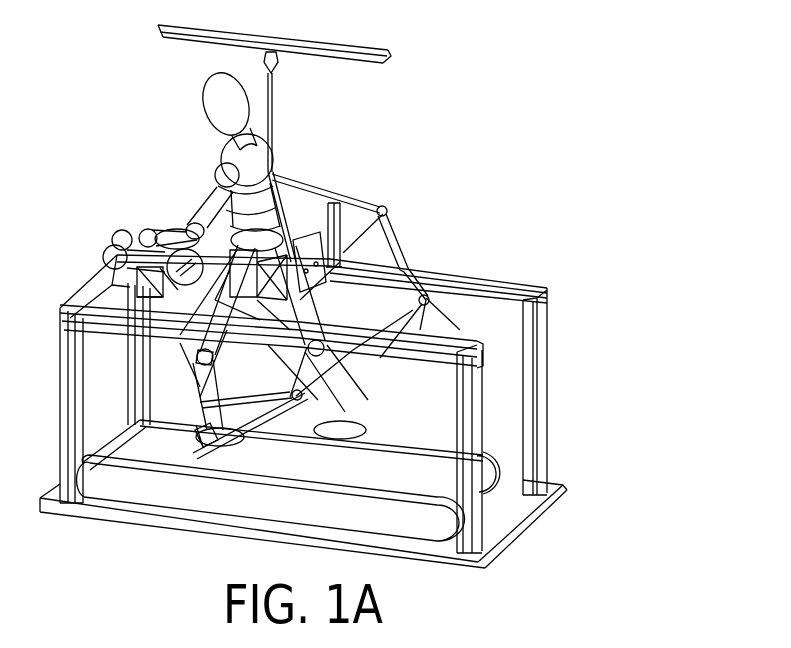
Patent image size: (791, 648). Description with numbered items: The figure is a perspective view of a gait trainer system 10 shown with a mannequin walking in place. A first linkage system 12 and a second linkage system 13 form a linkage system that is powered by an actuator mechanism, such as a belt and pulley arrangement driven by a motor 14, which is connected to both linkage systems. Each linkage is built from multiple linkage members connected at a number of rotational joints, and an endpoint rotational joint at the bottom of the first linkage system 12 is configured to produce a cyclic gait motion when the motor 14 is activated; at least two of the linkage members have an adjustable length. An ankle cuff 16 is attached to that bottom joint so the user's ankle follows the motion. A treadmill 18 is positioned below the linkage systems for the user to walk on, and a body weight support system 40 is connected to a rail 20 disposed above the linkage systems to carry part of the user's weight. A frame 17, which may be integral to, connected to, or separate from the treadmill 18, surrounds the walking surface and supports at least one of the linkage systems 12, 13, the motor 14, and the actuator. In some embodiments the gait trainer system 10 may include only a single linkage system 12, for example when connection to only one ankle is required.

The gait trainer system 10 is at (442, 66).
The first linkage system 12 is at (282, 414).
The second linkage system 13 is at (399, 249).
The motor 14 is at (107, 240).
The ankle cuff 16 is at (210, 432).
The frame 17 is at (486, 372).
The treadmill 18 is at (195, 502).
The rail 20 is at (155, 25).
The body weight support system 40 is at (280, 184).